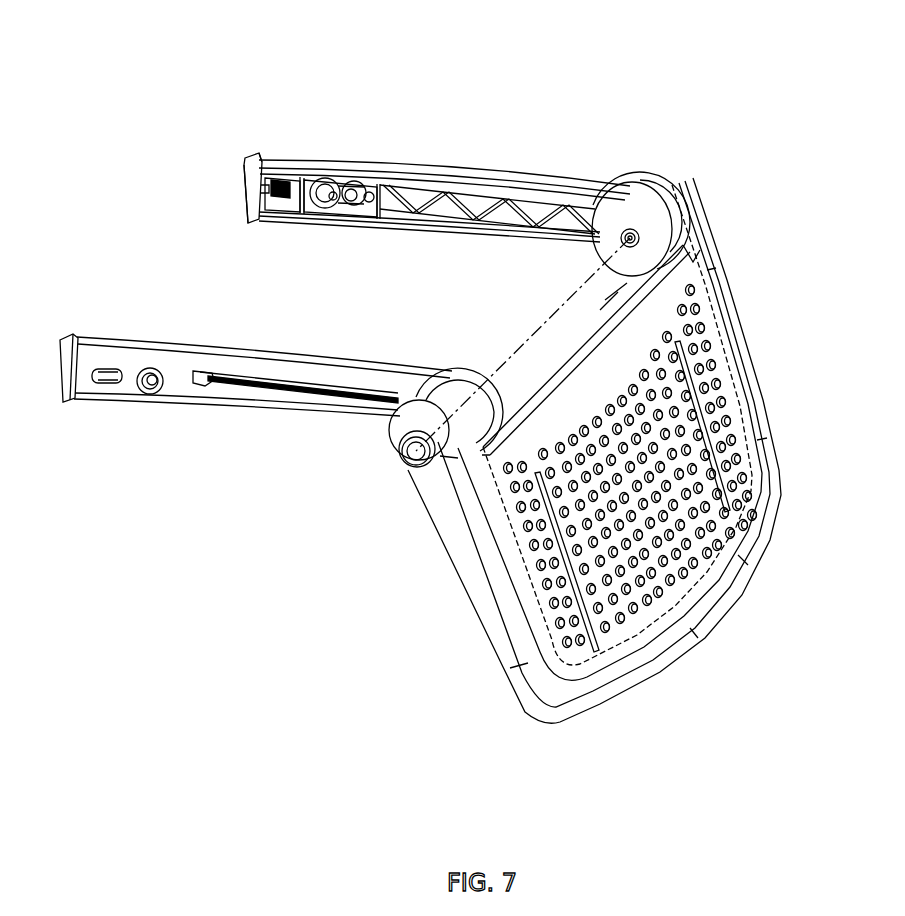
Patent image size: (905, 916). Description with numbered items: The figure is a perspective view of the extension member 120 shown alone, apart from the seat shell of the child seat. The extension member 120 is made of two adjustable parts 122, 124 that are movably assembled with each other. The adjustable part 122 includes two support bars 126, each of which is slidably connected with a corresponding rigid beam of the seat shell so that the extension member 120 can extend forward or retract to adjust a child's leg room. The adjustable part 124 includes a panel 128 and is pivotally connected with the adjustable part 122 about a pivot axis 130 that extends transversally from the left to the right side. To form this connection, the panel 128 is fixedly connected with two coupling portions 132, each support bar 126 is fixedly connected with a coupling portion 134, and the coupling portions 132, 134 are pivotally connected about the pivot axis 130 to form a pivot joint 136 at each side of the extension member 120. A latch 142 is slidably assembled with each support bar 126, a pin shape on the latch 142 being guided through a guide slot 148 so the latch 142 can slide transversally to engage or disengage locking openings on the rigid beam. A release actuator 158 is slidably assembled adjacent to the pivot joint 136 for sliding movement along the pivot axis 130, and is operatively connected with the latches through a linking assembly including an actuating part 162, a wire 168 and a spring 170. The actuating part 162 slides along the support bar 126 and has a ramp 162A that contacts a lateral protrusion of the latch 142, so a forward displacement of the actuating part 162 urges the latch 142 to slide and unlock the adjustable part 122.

The extension member 120 is at (146, 52).
The adjustable part 122 is at (551, 132).
The adjustable part 124 is at (740, 247).
The support bar 126 is at (288, 157).
The panel 128 is at (700, 628).
The pivot axis 130 is at (562, 300).
The coupling portion 132 is at (645, 178).
The coupling portion 134 is at (618, 286).
The pivot joint 136 is at (691, 170).
The latch 142 is at (340, 208).
The guide slot 148 is at (366, 204).
The release actuator 158 is at (412, 463).
The actuating part 162 is at (370, 180).
The ramp 162A is at (327, 208).
The wire 168 is at (474, 186).
The spring 170 is at (283, 198).